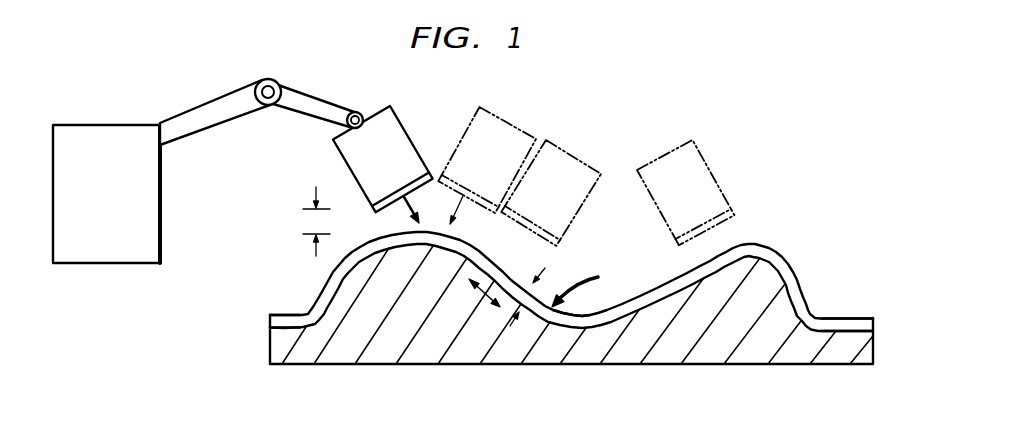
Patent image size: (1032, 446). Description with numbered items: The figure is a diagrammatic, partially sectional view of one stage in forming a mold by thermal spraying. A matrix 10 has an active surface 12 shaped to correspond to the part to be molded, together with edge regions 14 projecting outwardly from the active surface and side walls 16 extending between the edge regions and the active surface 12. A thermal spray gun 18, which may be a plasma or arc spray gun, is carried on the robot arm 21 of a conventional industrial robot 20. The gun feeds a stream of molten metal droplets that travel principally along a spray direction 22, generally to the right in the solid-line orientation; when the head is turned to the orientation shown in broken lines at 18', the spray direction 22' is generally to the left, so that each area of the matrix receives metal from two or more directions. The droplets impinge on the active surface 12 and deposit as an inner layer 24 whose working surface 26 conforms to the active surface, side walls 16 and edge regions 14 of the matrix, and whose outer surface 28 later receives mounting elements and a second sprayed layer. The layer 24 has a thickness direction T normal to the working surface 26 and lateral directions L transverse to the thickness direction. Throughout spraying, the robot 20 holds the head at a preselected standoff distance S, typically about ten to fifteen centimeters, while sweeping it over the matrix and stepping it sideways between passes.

The matrix 10 is at (389, 348).
The active surface 12 is at (632, 322).
The edge regions 14 is at (282, 334).
The side walls 16 is at (325, 314).
The thermal spray gun 18 is at (390, 146).
The thermal spray gun in broken-line orientation 18' is at (519, 163).
The industrial robot 20 is at (160, 228).
The robot arm 21 is at (307, 93).
The spray direction 22 is at (384, 219).
The spray direction in broken-line orientation 22' is at (483, 223).
The inner layer 24 is at (587, 287).
The working surface 26 is at (587, 328).
The outer surface 28 is at (683, 270).
The standoff distance S is at (316, 187).
The thickness direction T is at (545, 268).
The lateral directions L is at (482, 299).